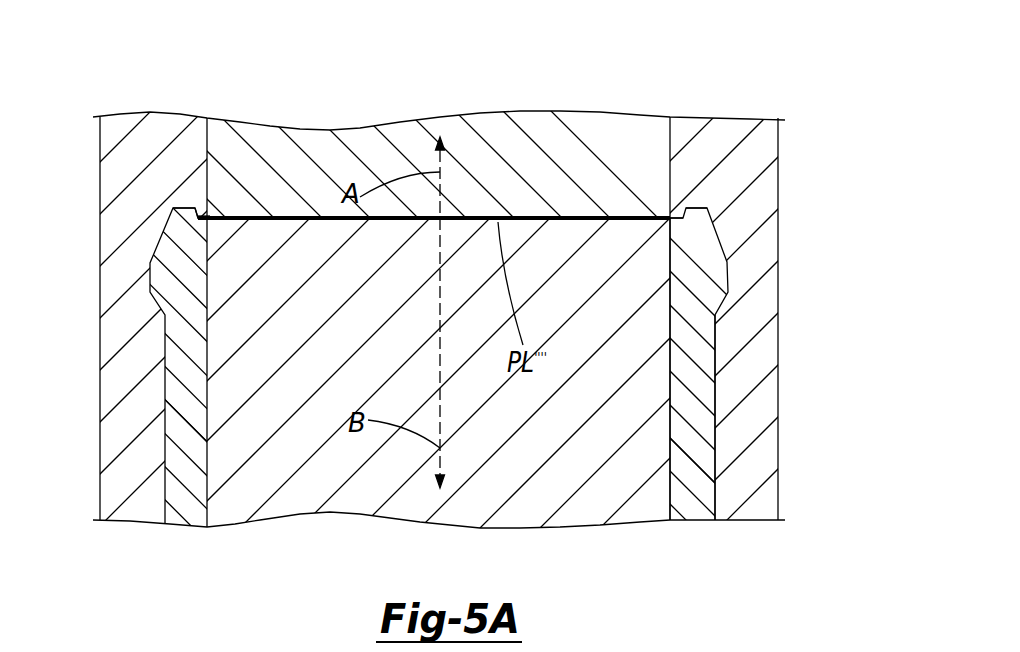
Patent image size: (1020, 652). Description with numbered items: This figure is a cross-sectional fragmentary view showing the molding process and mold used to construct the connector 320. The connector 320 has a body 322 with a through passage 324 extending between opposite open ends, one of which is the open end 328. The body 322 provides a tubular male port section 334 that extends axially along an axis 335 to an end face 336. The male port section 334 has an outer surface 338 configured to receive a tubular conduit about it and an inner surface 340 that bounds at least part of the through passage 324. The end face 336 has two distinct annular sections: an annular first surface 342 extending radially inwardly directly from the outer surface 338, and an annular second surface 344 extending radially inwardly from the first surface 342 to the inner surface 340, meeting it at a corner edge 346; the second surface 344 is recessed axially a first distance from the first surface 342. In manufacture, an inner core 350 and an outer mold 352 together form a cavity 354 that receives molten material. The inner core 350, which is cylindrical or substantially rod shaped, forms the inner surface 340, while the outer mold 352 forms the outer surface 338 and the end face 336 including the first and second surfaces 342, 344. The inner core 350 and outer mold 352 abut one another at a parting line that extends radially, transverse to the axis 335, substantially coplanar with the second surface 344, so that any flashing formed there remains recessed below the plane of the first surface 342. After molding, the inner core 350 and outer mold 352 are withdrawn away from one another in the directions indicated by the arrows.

The connector 320 is at (738, 213).
The body 322 is at (695, 413).
The through passage 324 is at (585, 293).
The open end 328 is at (698, 207).
The tubular male port section 334 is at (143, 425).
The axis 335 is at (437, 322).
The end face 336 is at (676, 207).
The outer surface 338 is at (722, 468).
The inner surface 340 is at (664, 472).
The annular first surface 342 is at (176, 203).
The annular second surface 344 is at (202, 212).
The corner edge 346 is at (208, 222).
The inner core 350 is at (291, 490).
The outer mold 352 is at (118, 233).
The cavity 354 is at (186, 405).